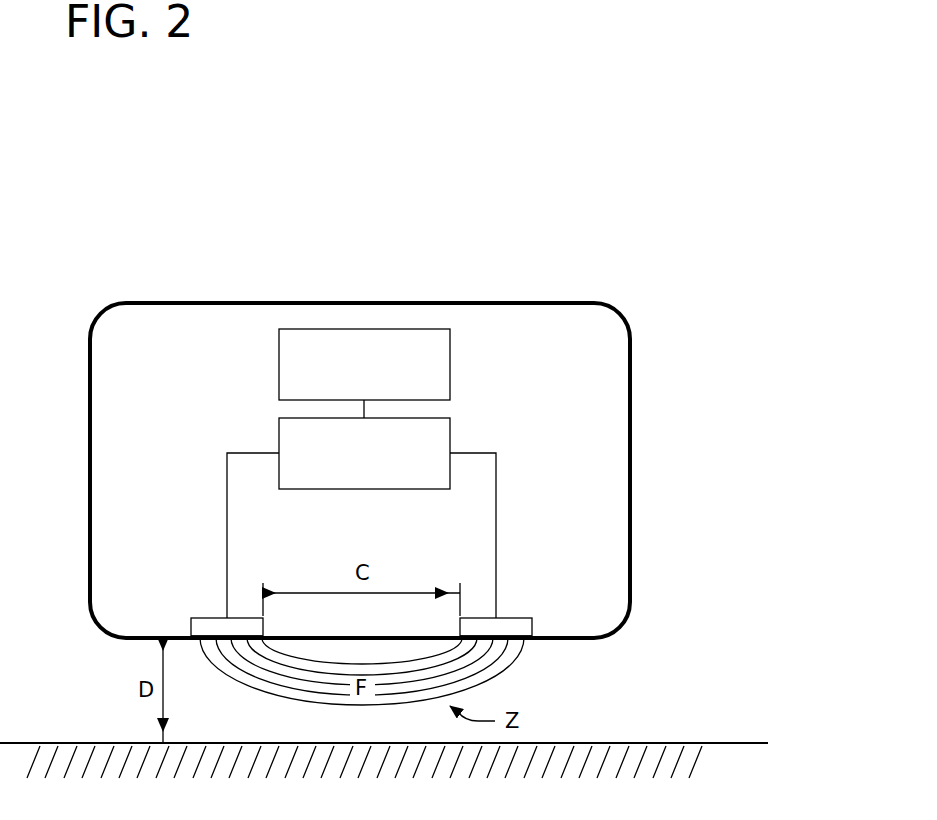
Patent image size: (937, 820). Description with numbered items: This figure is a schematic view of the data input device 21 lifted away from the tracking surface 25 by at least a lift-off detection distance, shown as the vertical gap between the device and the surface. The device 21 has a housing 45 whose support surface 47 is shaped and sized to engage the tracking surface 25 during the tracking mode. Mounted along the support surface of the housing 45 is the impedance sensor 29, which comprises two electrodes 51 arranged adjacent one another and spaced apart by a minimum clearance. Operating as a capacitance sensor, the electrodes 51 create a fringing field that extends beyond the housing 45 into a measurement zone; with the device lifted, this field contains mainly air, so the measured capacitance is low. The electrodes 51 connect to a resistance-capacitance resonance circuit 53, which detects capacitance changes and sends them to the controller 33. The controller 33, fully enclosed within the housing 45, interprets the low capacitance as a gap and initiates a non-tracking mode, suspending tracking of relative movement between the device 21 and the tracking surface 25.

The data input device 21 is at (417, 489).
The housing 45 is at (630, 533).
The support surface 47 is at (578, 639).
The controller 33 is at (364, 364).
The resistance-capacitance (RC) resonance circuit 53 is at (361, 509).
The impedance sensor 29 is at (212, 616).
The electrodes 51 is at (190, 620).
The tracking surface 25 is at (753, 743).